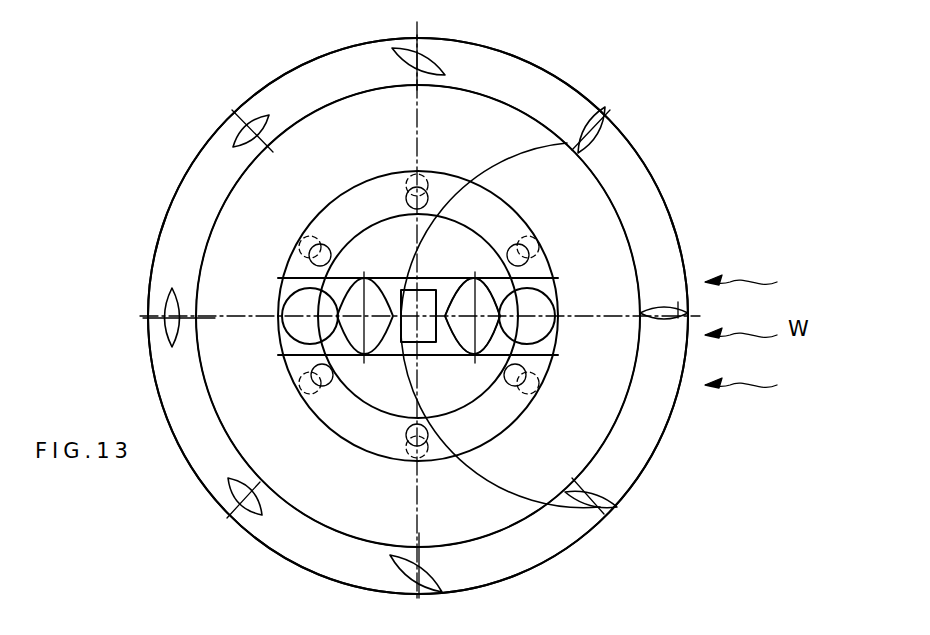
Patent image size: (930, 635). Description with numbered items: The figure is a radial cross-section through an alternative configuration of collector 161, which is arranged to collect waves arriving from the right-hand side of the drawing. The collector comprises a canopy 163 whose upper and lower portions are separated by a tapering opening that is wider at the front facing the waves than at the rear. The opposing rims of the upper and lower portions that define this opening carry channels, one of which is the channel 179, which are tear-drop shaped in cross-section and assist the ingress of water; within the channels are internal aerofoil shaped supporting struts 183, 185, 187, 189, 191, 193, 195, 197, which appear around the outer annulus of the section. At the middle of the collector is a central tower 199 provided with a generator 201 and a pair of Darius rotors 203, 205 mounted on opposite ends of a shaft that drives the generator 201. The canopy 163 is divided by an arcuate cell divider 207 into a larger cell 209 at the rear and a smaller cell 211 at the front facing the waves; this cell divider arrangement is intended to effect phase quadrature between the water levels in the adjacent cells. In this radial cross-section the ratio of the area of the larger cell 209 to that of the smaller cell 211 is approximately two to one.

The collector 161 is at (512, 48).
The canopy 163 is at (657, 180).
The channel 179 is at (653, 243).
The aerofoil shaped supporting strut 183 is at (590, 503).
The aerofoil shaped supporting strut 185 is at (410, 575).
The aerofoil shaped supporting strut 187 is at (228, 500).
The aerofoil shaped supporting strut 189 is at (165, 335).
The aerofoil shaped supporting strut 191 is at (258, 113).
The aerofoil shaped supporting strut 193 is at (420, 60).
The aerofoil shaped supporting strut 195 is at (597, 123).
The aerofoil shaped supporting strut 197 is at (688, 313).
The central tower 199 is at (470, 357).
The generator 201 is at (408, 342).
The Darius rotor 203 is at (363, 278).
The Darius rotor 205 is at (475, 275).
The arcuate cell divider 207 is at (513, 475).
The larger cell 209 is at (232, 228).
The smaller cell 211 is at (620, 397).